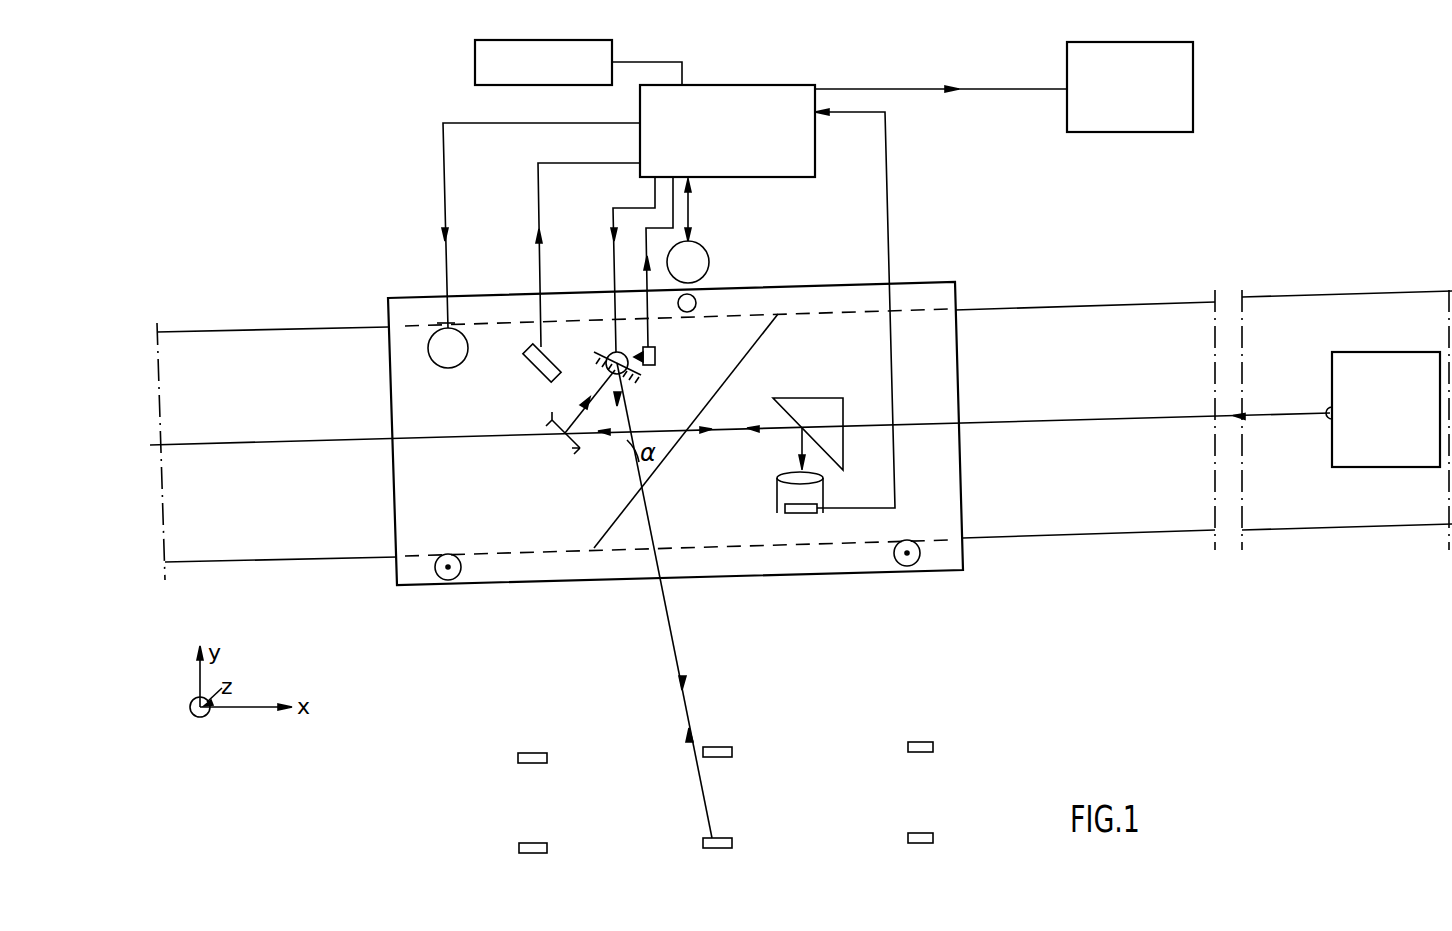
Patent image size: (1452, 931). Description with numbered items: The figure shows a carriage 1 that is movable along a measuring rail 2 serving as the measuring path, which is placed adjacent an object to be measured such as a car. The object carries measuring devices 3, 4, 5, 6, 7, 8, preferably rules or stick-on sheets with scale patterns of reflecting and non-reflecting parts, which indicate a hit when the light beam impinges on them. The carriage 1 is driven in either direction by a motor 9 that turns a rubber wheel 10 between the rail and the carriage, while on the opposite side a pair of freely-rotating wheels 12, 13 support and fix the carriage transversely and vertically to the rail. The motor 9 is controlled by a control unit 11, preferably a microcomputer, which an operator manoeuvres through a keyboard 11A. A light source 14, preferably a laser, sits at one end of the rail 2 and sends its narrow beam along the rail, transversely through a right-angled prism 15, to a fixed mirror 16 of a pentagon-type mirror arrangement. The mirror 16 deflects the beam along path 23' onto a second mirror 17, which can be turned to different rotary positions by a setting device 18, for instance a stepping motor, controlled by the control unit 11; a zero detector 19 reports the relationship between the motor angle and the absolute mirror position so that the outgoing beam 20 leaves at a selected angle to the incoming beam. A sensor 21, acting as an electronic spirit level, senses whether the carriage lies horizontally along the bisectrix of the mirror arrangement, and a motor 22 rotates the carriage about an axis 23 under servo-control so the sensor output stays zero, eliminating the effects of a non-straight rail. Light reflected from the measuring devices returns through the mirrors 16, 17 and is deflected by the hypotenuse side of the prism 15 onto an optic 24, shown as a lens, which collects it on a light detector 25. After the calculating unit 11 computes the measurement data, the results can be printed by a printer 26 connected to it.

The carriage 1 is at (941, 281).
The measuring rail 2 is at (1168, 300).
The measuring device 3 is at (535, 843).
The measuring device 4 is at (722, 838).
The measuring device 5 is at (920, 833).
The measuring device 6 is at (918, 742).
The measuring device 7 is at (720, 747).
The measuring device 8 is at (528, 753).
The motor 9 is at (698, 250).
The rubber wheel 10 is at (691, 312).
The control unit 11 is at (785, 85).
The keyboard 11A is at (475, 62).
The freely-rotating wheel 12 is at (906, 542).
The freely-rotating wheel 13 is at (448, 554).
The light source 14 is at (1332, 452).
The right-angled prism 15 is at (817, 398).
The mirror 16 is at (568, 446).
The mirror 17 is at (626, 380).
The setting device 18 is at (612, 354).
The zero detector 19 is at (655, 360).
The outgoing beam 20 is at (681, 688).
The sensor 21 is at (526, 358).
The motor 22 is at (428, 348).
The axis 23 is at (692, 431).
The deflected light beam 23' is at (582, 401).
The optic 24 is at (792, 470).
The light detector 25 is at (785, 512).
The printer 26 is at (1184, 108).